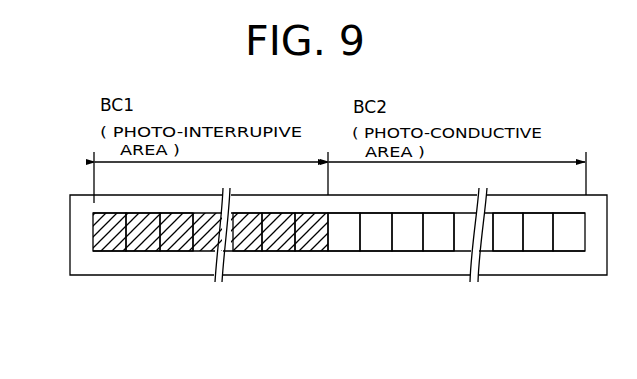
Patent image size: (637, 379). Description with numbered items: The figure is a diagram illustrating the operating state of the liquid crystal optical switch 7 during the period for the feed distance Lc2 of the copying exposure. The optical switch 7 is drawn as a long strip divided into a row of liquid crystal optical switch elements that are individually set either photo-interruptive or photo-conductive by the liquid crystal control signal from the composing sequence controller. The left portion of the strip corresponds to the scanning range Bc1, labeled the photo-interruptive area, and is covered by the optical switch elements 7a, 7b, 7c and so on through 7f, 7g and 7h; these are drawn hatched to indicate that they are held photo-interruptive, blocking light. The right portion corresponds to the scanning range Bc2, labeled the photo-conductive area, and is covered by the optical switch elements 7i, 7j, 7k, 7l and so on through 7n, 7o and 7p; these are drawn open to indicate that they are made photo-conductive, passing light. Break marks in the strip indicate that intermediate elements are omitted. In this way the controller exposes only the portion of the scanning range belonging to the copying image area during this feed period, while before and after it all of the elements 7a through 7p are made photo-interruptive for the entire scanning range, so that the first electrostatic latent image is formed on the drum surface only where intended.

The optical switch 7 is at (70, 250).
The optical switch element 7a is at (108, 251).
The optical switch element 7b is at (143, 251).
The optical switch element 7c is at (176, 251).
The optical switch element 7f is at (247, 251).
The optical switch element 7g is at (278, 251).
The optical switch element 7h is at (310, 251).
The optical switch element 7i is at (343, 251).
The optical switch element 7j is at (375, 251).
The optical switch element 7k is at (408, 251).
The optical switch element 7l is at (440, 251).
The optical switch element 7n is at (508, 251).
The optical switch element 7o is at (540, 251).
The optical switch element 7p is at (572, 251).